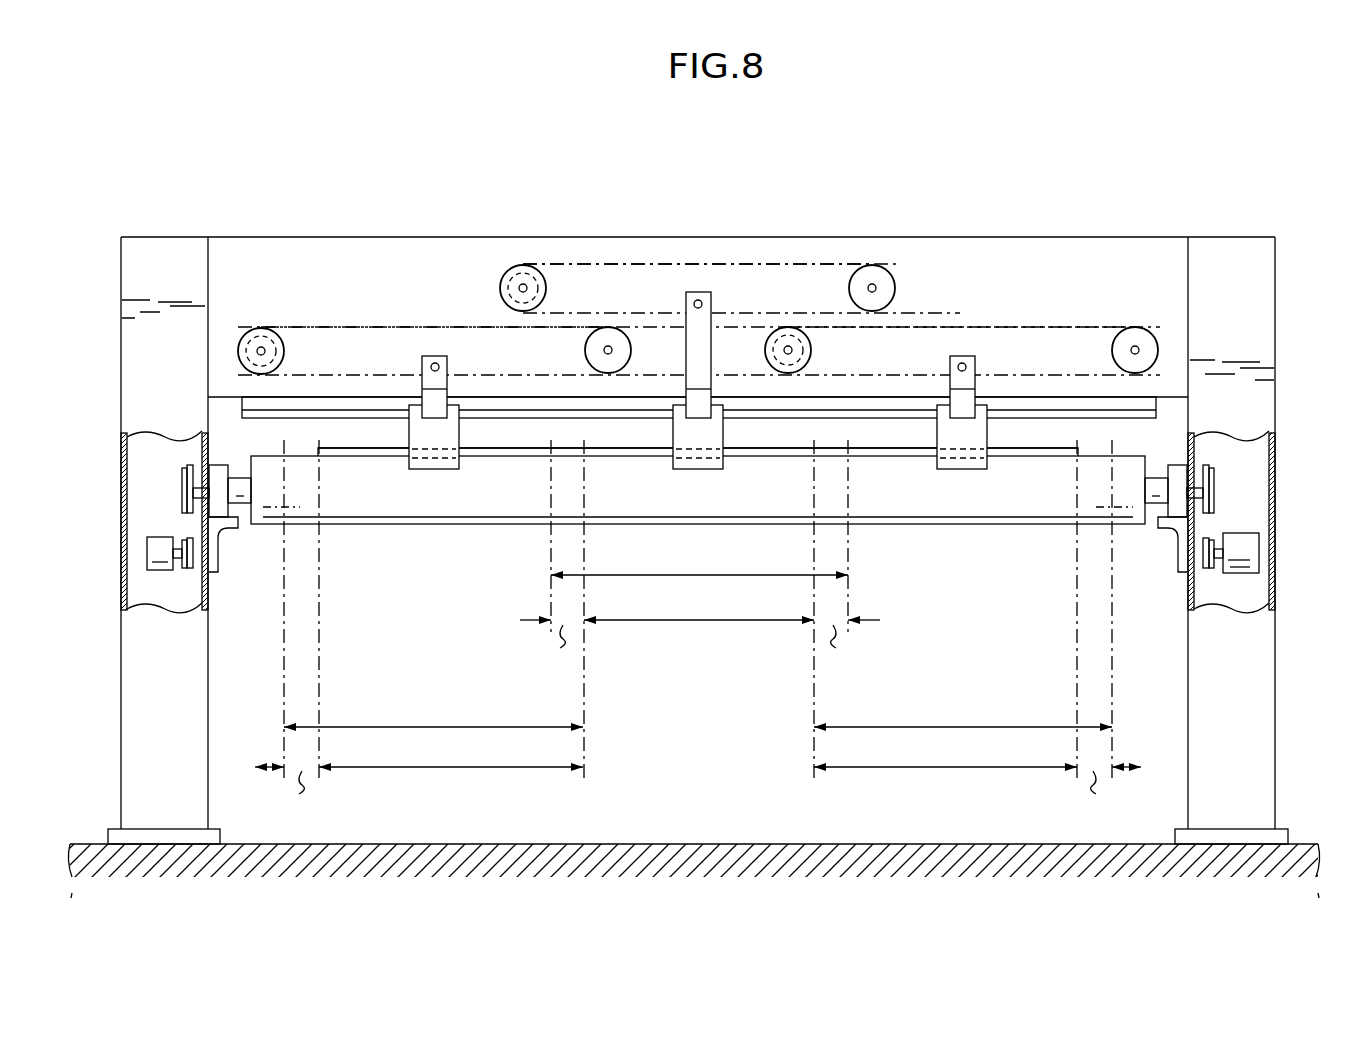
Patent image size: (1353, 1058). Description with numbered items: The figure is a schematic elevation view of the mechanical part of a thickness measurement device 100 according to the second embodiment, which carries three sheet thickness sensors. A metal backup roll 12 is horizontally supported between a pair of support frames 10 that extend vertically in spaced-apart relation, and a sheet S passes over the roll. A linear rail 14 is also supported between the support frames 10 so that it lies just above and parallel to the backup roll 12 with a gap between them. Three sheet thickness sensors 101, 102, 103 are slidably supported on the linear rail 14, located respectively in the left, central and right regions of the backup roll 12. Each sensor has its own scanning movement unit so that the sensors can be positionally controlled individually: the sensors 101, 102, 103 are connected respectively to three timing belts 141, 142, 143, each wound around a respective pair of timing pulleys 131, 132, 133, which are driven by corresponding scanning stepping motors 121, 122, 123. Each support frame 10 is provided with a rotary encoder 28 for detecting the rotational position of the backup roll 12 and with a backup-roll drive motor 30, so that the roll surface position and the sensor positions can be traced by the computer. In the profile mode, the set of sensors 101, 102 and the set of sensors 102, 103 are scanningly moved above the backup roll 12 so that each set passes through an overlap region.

The thickness measurement device 100 is at (468, 195).
The support frame 10 is at (140, 357).
The backup roll 12 is at (436, 494).
The linear rail 14 is at (268, 415).
The rotary encoder 28 is at (1215, 474).
The backup-roll drive motor 30 is at (1244, 546).
The sheet thickness sensor 101 is at (399, 437).
The sheet thickness sensor 102 is at (731, 437).
The sheet thickness sensor 103 is at (990, 436).
The scanning stepping motor 121 is at (285, 349).
The scanning stepping motor 122 is at (546, 288).
The scanning stepping motor 123 is at (810, 352).
The timing pulley 131 is at (622, 357).
The timing pulley 132 is at (873, 278).
The timing pulley 133 is at (1137, 340).
The timing belt 141 is at (420, 333).
The timing belt 142 is at (622, 265).
The timing belt 143 is at (985, 335).
The sheet S is at (523, 456).